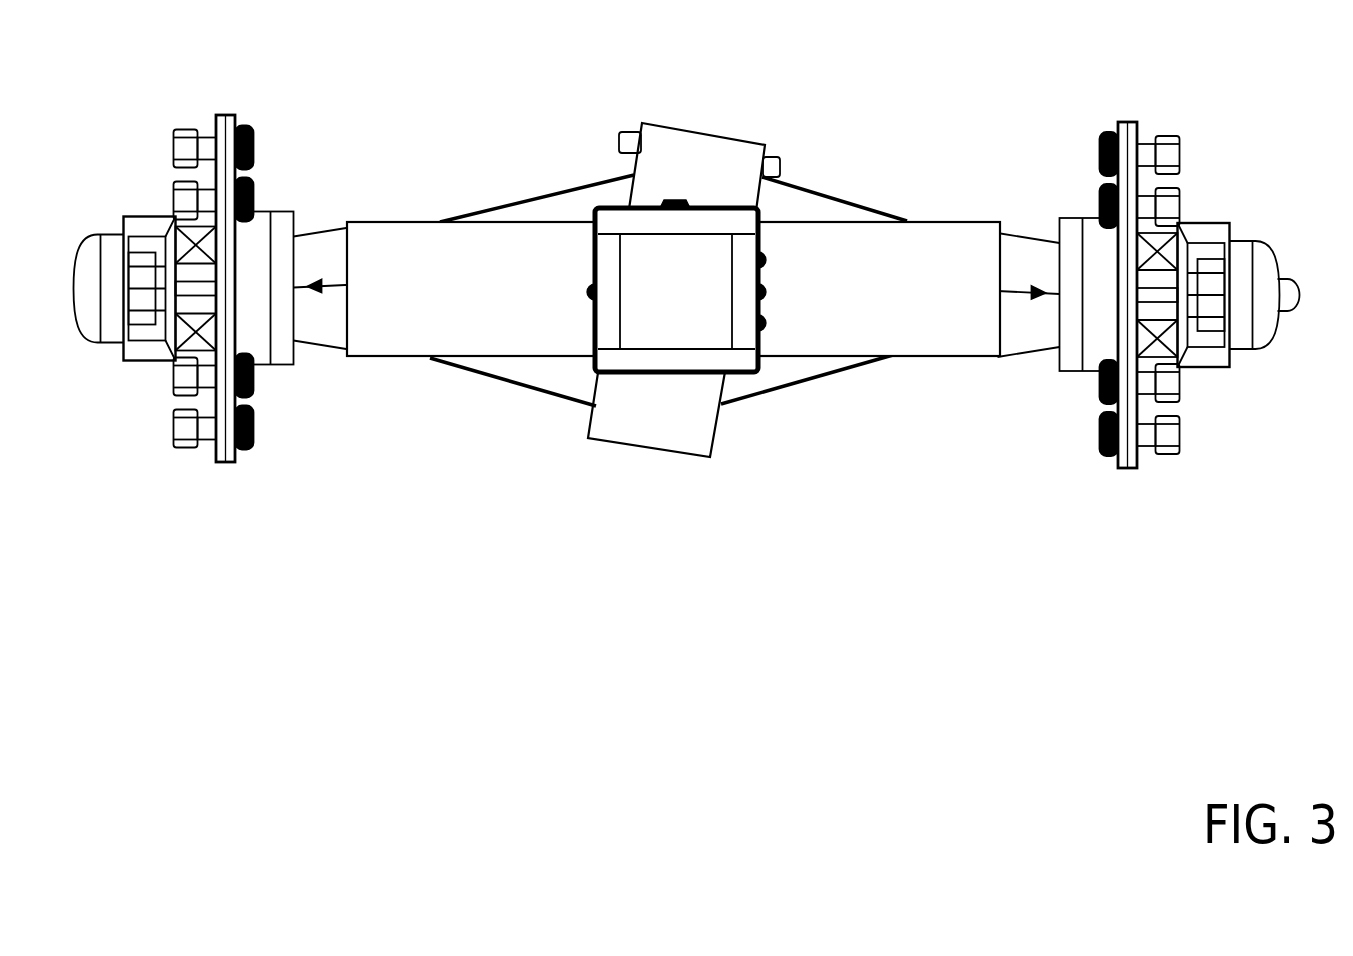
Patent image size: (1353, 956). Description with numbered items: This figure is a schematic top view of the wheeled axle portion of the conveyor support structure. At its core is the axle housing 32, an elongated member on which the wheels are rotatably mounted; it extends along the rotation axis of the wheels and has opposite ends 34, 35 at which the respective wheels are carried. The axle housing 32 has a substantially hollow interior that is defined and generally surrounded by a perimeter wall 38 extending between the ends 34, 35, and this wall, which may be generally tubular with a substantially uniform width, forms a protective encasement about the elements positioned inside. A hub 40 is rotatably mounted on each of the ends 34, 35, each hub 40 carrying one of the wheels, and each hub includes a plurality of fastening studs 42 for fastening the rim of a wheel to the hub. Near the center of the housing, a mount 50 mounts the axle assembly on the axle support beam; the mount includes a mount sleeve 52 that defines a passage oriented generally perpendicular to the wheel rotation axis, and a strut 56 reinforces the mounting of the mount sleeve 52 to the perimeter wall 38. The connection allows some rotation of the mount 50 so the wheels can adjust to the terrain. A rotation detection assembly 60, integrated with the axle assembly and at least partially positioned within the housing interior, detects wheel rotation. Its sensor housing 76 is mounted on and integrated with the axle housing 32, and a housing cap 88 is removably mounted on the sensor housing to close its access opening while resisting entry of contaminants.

The axle housing 32 is at (879, 310).
The end 34 is at (471, 287).
The end 35 is at (989, 192).
The perimeter wall 38 is at (815, 240).
The hub 40 is at (219, 114).
The fastening stud 42 is at (187, 131).
The mount 50 is at (713, 286).
The mount sleeve 52 is at (733, 162).
The strut 56 is at (752, 392).
The rotation detection assembly 60 is at (552, 323).
The sensor housing 76 is at (646, 398).
The housing cap 88 is at (680, 330).